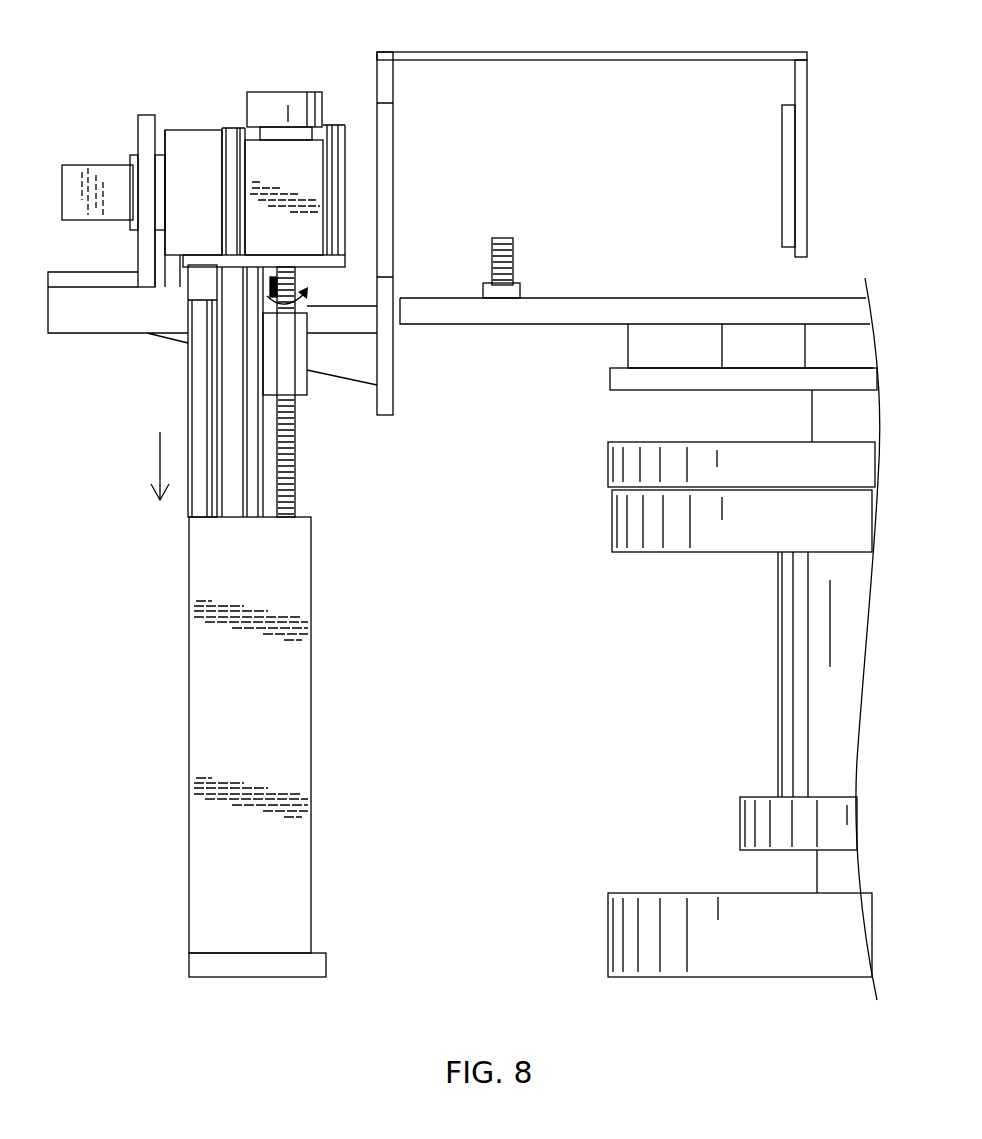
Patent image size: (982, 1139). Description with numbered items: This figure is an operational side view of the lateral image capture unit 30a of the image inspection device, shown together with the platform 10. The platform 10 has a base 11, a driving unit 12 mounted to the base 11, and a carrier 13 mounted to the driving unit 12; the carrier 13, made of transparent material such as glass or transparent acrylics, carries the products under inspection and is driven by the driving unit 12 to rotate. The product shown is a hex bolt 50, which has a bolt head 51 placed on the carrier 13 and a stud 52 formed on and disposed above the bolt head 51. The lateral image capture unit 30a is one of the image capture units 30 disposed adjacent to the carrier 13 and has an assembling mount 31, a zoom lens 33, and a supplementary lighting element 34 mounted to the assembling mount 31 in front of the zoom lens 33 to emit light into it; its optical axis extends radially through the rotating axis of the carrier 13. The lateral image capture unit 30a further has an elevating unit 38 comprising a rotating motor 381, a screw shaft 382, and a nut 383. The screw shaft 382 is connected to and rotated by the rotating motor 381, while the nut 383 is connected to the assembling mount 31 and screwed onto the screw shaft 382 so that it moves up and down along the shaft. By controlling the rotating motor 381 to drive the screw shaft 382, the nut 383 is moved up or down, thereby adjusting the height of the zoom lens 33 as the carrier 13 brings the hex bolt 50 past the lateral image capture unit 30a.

The platform 10 is at (674, 746).
The base 11 is at (708, 917).
The driving unit 12 is at (817, 675).
The carrier 13 is at (573, 312).
The image capture unit 30 is at (134, 108).
The lateral image capture unit 30a is at (149, 363).
The assembling mount 31 is at (130, 298).
The zoom lens 33 is at (325, 133).
The supplementary lighting element 34 is at (790, 137).
The elevating unit 38 is at (267, 90).
The rotating motor 381 is at (266, 167).
The screw shaft 382 is at (290, 467).
The nut 383 is at (292, 370).
The hex bolt 50 is at (553, 239).
The bolt head 51 is at (520, 288).
The stud 52 is at (502, 238).